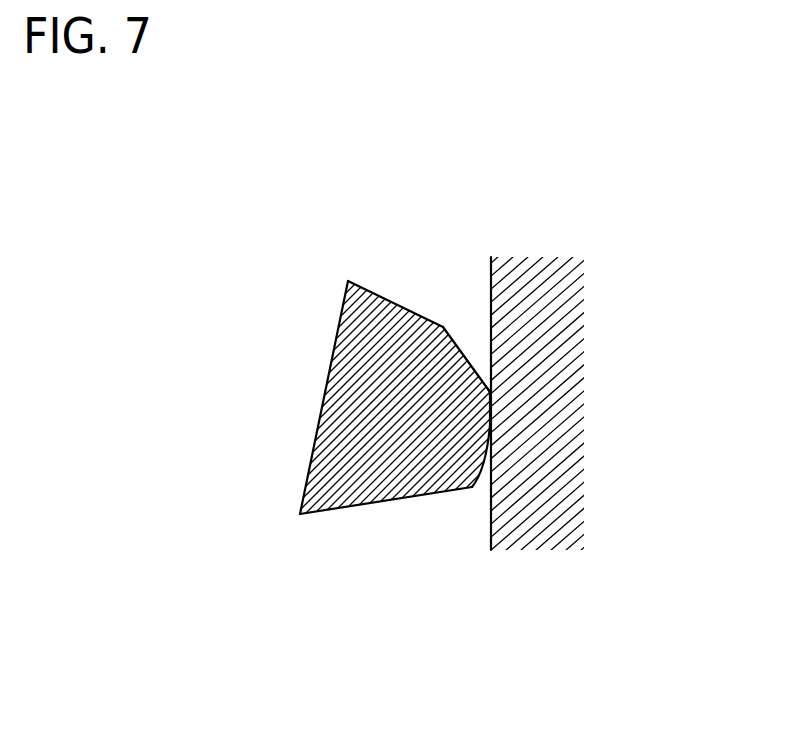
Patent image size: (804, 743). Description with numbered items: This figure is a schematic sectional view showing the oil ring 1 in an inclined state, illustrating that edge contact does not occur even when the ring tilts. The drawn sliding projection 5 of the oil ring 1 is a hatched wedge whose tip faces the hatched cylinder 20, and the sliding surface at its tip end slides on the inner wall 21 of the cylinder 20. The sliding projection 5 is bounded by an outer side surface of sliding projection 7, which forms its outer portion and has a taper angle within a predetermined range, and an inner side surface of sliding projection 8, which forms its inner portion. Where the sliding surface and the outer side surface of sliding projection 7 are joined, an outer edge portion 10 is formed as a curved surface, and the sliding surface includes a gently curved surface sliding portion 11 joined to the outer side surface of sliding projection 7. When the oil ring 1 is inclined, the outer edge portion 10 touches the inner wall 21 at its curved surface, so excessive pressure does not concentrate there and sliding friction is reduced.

The oil ring 1 is at (451, 374).
The sliding projection 5 is at (395, 402).
The outer side surface of sliding projection 7 is at (473, 358).
The inner side surface of sliding projection 8 is at (380, 503).
The outer edge portion 10 is at (492, 388).
The curved surface sliding portion 11 is at (493, 447).
The cylinder 20 is at (541, 369).
The inner wall 21 is at (492, 295).